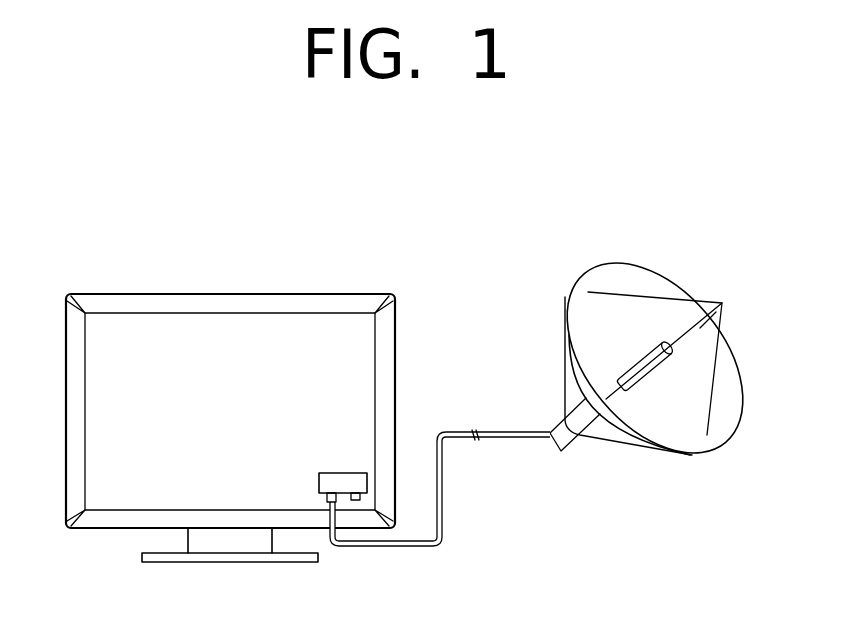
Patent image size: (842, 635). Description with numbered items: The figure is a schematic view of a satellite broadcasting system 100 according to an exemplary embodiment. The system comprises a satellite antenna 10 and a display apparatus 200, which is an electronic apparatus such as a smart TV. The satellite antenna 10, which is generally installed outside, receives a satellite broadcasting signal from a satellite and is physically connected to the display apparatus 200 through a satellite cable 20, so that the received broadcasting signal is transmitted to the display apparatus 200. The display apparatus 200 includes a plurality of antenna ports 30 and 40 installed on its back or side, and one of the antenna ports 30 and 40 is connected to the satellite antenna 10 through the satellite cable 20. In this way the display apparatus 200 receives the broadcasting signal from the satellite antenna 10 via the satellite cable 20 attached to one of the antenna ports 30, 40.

The satellite broadcasting system 100 is at (396, 212).
The display apparatus 200 is at (202, 294).
The satellite antenna 10 is at (647, 268).
The satellite cable 20 is at (442, 509).
The antenna port 30 is at (328, 503).
The antenna port 40 is at (353, 501).